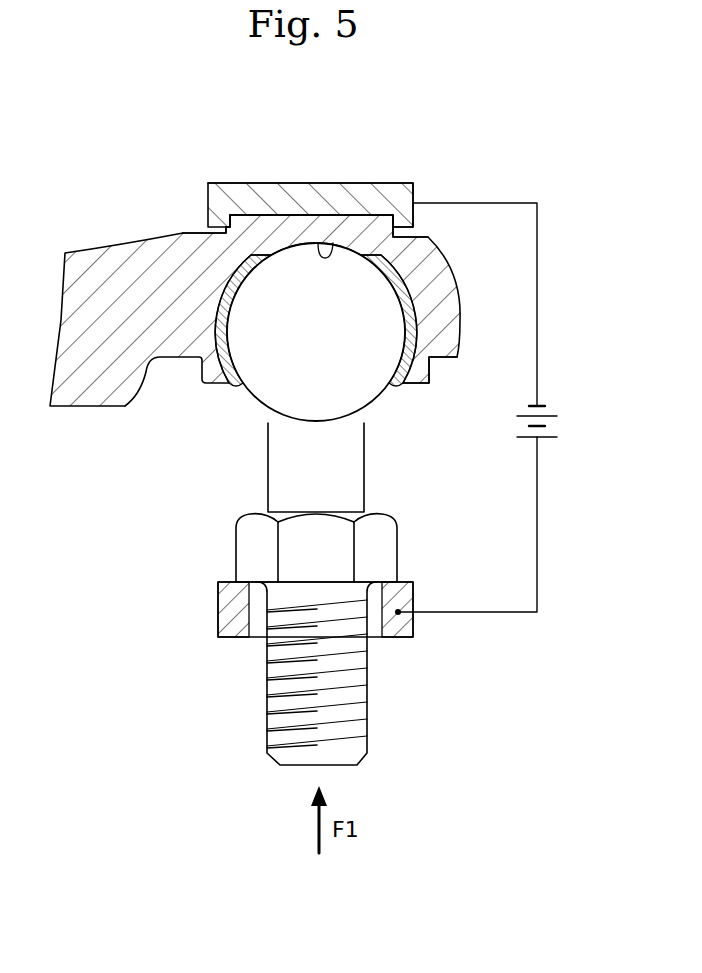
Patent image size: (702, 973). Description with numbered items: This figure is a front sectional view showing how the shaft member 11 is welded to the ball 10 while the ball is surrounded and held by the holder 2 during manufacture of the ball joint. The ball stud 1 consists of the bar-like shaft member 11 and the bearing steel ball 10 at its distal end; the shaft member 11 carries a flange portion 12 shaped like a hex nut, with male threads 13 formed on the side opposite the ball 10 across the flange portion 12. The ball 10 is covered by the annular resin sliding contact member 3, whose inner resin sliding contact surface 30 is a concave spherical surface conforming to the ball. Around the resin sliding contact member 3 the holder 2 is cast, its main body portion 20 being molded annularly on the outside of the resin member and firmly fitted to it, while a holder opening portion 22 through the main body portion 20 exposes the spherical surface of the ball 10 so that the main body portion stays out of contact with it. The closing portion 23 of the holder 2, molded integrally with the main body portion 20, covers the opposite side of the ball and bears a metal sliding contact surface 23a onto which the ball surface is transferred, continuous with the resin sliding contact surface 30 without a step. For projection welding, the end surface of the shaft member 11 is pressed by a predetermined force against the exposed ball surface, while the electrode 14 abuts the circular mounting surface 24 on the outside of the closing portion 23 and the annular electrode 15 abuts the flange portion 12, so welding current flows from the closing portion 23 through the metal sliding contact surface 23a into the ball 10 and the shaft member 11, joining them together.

The ball stud 1 is at (263, 720).
The holder 2 is at (100, 408).
The resin sliding contact member 3 is at (418, 302).
The ball 10 is at (258, 402).
The shaft member 11 is at (348, 478).
The flange portion 12 is at (250, 554).
The male threads 13 is at (267, 688).
The electrode 14 is at (388, 198).
The electrode 15 is at (218, 613).
The main body portion 20 is at (445, 352).
The holder opening portion 22 is at (237, 386).
The closing portion 23 is at (288, 227).
The metal sliding contact surface 23a is at (327, 253).
The mounting surface 24 is at (250, 213).
The resin sliding contact surface 30 is at (398, 340).